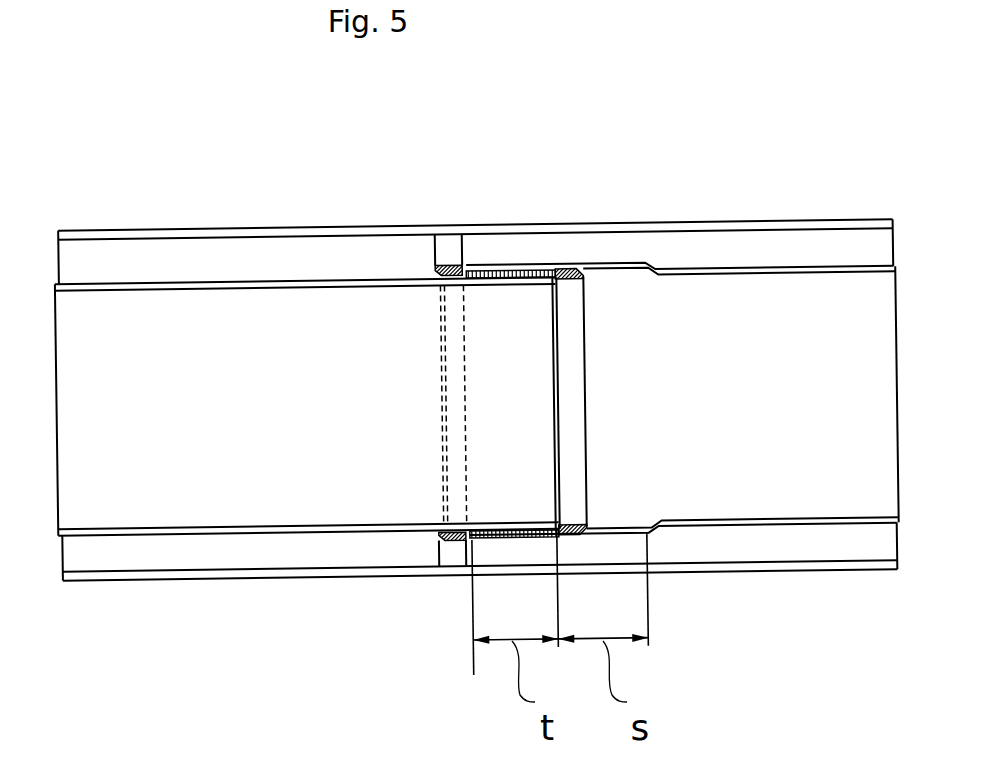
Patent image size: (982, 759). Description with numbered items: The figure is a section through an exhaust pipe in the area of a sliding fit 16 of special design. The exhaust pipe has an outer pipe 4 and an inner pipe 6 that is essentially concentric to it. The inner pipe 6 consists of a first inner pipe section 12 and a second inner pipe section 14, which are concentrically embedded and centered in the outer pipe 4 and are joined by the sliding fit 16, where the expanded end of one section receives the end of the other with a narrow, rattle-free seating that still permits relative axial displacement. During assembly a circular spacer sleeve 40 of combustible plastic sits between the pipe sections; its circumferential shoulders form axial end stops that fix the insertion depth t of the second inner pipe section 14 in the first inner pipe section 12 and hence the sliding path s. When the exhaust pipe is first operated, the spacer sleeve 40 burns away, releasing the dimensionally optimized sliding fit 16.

The outer pipe 4 is at (157, 231).
The inner pipe 6 is at (128, 536).
The first inner pipe section 12 is at (690, 270).
The second inner pipe section 14 is at (327, 283).
The sliding fit 16 is at (568, 205).
The spacer sleeve 40 is at (468, 268).